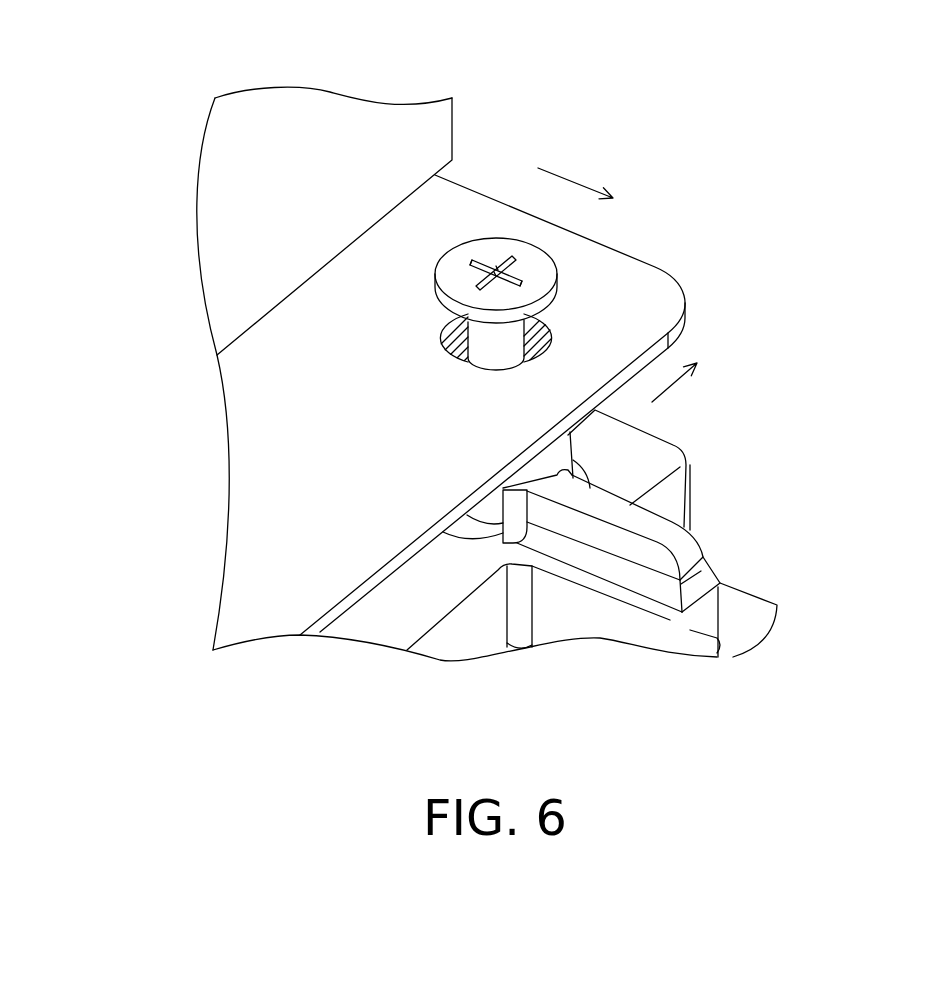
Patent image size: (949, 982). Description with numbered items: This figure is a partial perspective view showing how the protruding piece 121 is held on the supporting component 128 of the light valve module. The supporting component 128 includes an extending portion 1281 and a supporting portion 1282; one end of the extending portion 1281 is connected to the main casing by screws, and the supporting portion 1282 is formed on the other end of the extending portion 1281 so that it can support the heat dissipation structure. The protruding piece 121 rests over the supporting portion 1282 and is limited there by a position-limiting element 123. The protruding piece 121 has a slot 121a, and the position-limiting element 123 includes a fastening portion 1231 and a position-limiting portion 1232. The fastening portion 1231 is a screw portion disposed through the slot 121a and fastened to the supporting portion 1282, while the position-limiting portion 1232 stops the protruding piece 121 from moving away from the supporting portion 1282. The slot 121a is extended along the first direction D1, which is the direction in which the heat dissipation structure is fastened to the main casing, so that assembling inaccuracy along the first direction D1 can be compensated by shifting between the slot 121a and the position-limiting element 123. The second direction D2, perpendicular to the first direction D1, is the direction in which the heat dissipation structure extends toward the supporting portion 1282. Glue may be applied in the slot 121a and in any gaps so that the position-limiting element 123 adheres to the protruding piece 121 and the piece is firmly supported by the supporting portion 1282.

The protruding piece 121 is at (457, 203).
The slot 121a is at (437, 350).
The position-limiting element 123 is at (622, 271).
The fastening portion 1231 is at (515, 338).
The position-limiting portion 1232 is at (543, 273).
The supporting component 128 is at (669, 533).
The extending portion 1281 is at (738, 603).
The supporting portion 1282 is at (560, 455).
The first direction D1 is at (677, 383).
The second direction D2 is at (563, 175).